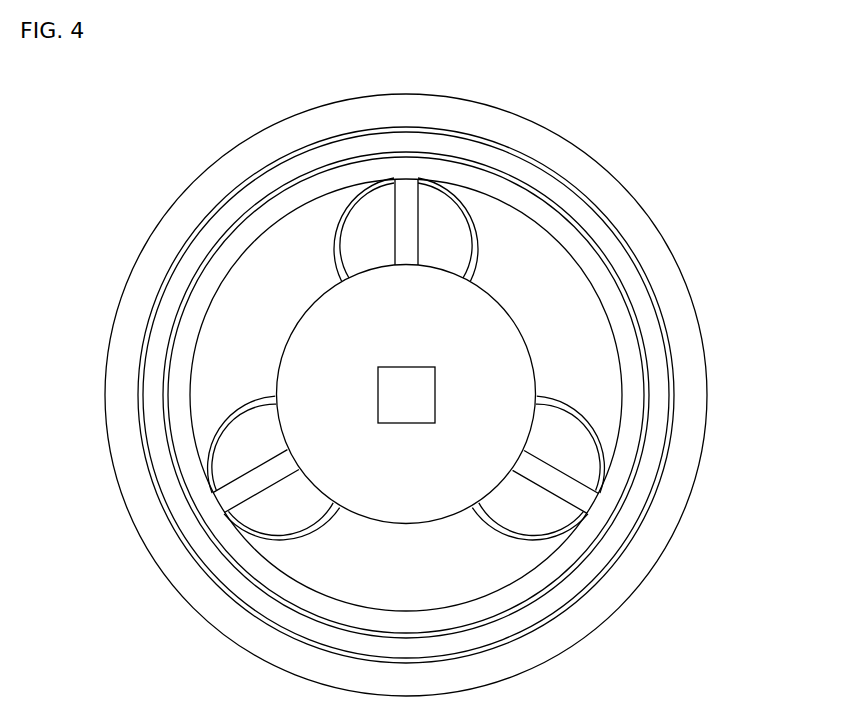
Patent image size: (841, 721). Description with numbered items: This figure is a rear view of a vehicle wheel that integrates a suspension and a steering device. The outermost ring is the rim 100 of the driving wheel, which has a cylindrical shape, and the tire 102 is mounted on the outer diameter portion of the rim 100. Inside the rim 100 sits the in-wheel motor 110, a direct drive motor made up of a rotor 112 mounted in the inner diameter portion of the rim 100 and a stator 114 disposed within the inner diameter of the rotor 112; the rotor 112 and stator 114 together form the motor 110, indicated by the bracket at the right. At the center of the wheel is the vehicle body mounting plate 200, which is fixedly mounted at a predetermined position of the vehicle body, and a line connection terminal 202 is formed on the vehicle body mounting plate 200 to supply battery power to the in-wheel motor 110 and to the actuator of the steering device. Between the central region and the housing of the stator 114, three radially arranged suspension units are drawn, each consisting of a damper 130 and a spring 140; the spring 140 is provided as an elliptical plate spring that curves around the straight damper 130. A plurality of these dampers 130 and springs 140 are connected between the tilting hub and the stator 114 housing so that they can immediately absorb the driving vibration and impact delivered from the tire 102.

The rim 100 is at (461, 395).
The tire 102 is at (647, 257).
The in-wheel motor 110 is at (480, 395).
The rotor 112 is at (663, 413).
The stator 114 is at (630, 340).
The damper 130 is at (405, 190).
The spring 140 is at (460, 213).
The vehicle body mounting plate 200 is at (490, 333).
The line connection terminal 202 is at (407, 423).